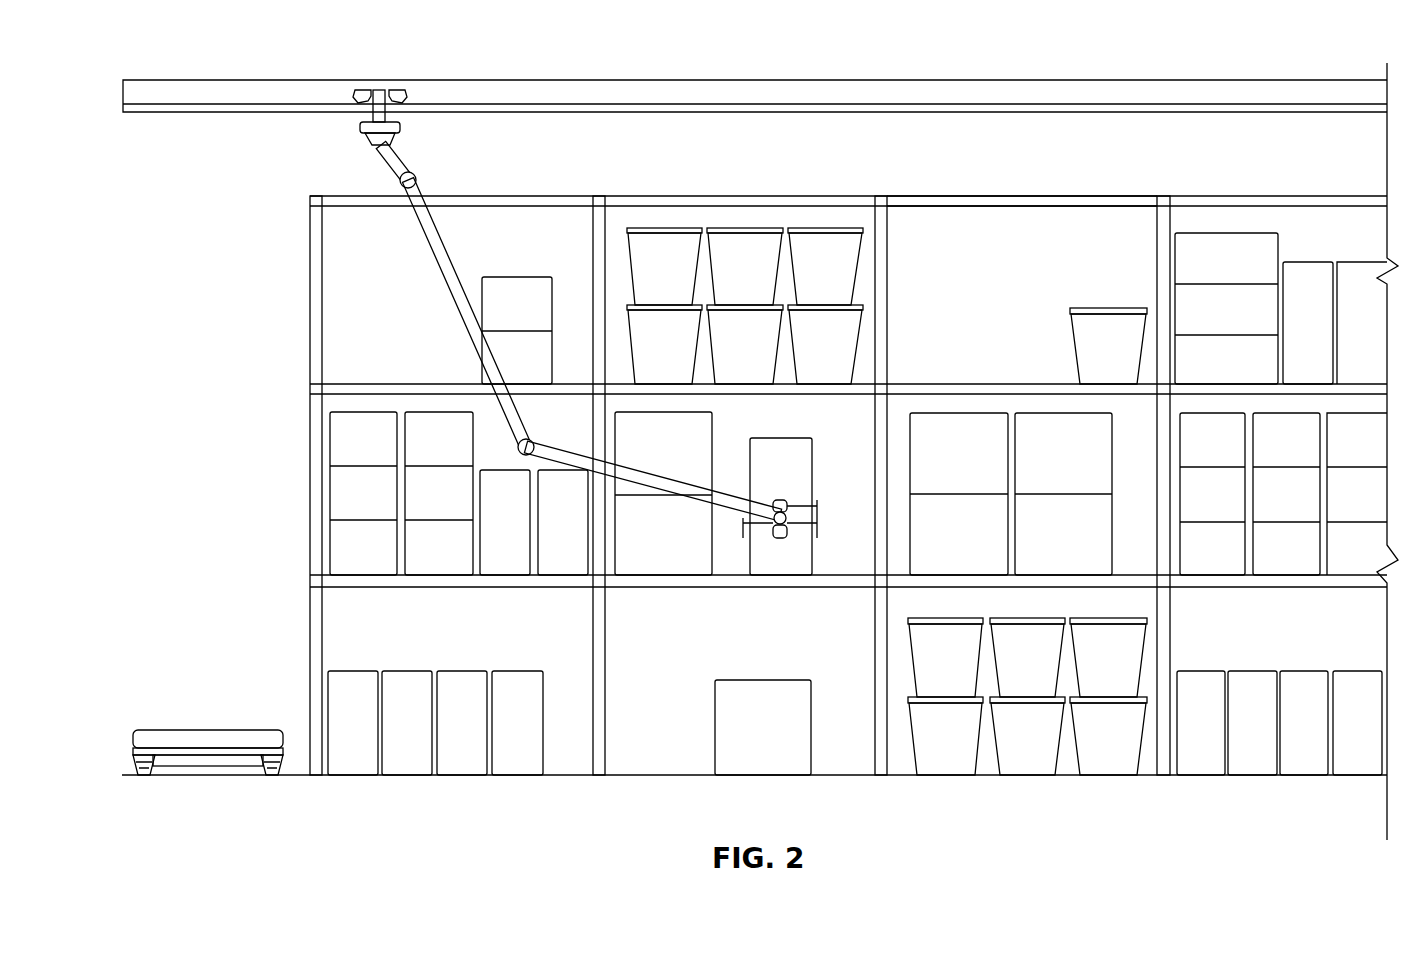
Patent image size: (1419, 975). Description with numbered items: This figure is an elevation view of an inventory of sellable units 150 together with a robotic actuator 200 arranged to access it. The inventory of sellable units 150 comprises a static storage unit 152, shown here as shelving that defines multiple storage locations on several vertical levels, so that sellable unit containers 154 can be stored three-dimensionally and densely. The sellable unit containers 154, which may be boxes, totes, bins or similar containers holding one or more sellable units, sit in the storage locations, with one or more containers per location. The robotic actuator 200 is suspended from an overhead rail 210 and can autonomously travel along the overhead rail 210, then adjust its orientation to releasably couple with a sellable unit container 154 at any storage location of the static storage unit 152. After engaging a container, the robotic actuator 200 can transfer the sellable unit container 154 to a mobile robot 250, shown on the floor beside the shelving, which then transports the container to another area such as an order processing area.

The inventory of sellable units 150 is at (1276, 168).
The static storage unit 152 is at (1045, 196).
The sellable unit containers 154 is at (508, 277).
The robotic actuator 200 is at (356, 158).
The overhead rail 210 is at (865, 80).
The mobile robot 250 is at (207, 729).